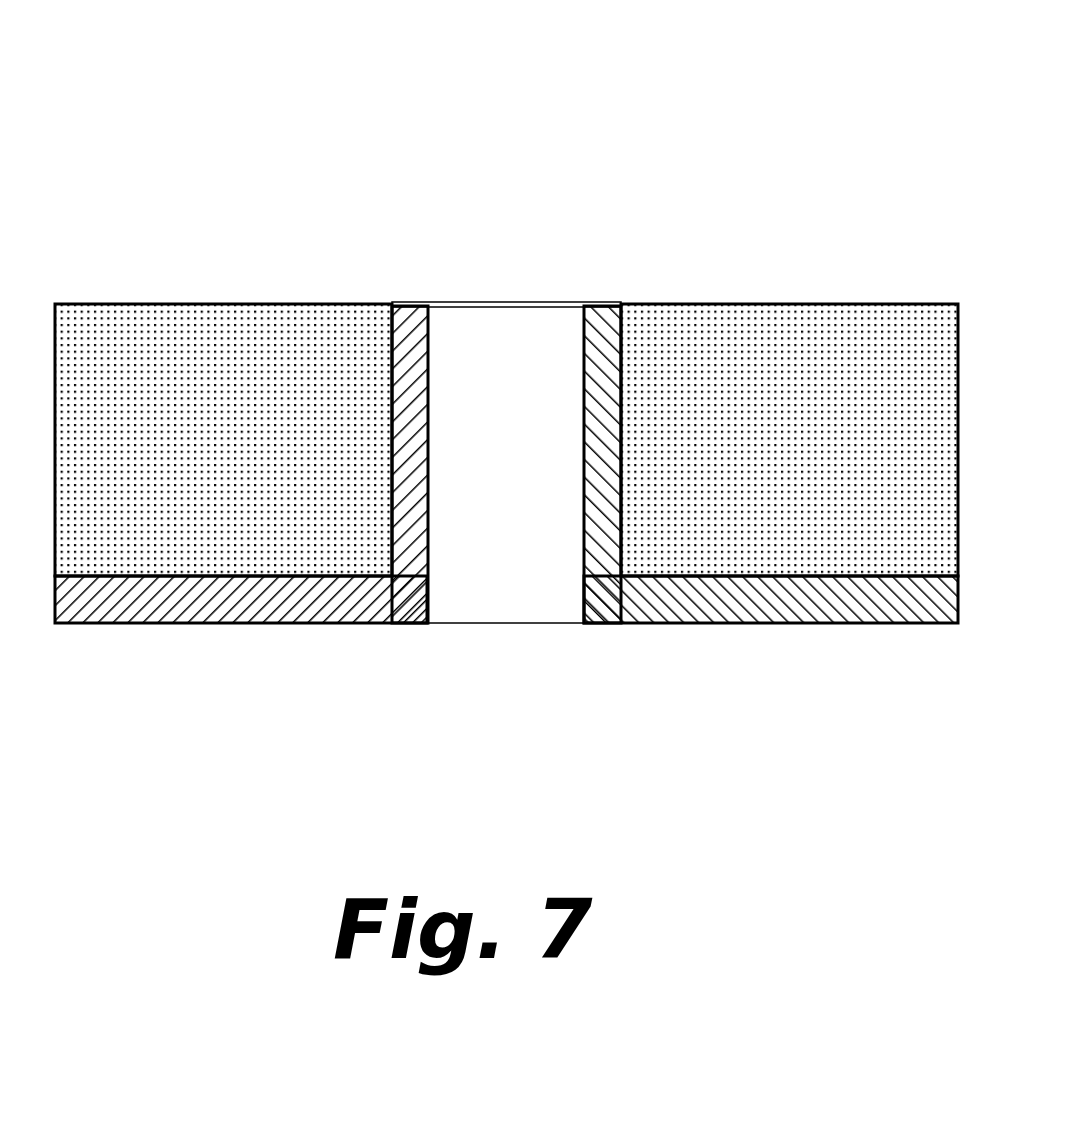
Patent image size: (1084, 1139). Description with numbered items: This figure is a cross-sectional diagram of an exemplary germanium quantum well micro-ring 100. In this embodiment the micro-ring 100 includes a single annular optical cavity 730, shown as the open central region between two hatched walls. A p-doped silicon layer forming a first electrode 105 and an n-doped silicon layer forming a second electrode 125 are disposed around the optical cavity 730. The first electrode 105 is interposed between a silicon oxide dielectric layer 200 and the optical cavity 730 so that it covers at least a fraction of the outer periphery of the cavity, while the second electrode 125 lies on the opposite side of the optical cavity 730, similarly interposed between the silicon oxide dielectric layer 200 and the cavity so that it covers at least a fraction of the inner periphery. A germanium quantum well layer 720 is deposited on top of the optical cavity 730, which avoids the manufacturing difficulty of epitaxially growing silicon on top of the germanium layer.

The micro-ring 100 is at (506, 384).
The silicon oxide dielectric layer 200 is at (168, 352).
The germanium quantum well layer 720 is at (525, 302).
The annular optical cavity 730 is at (498, 572).
The first electrode 105 is at (220, 623).
The second electrode 125 is at (780, 600).